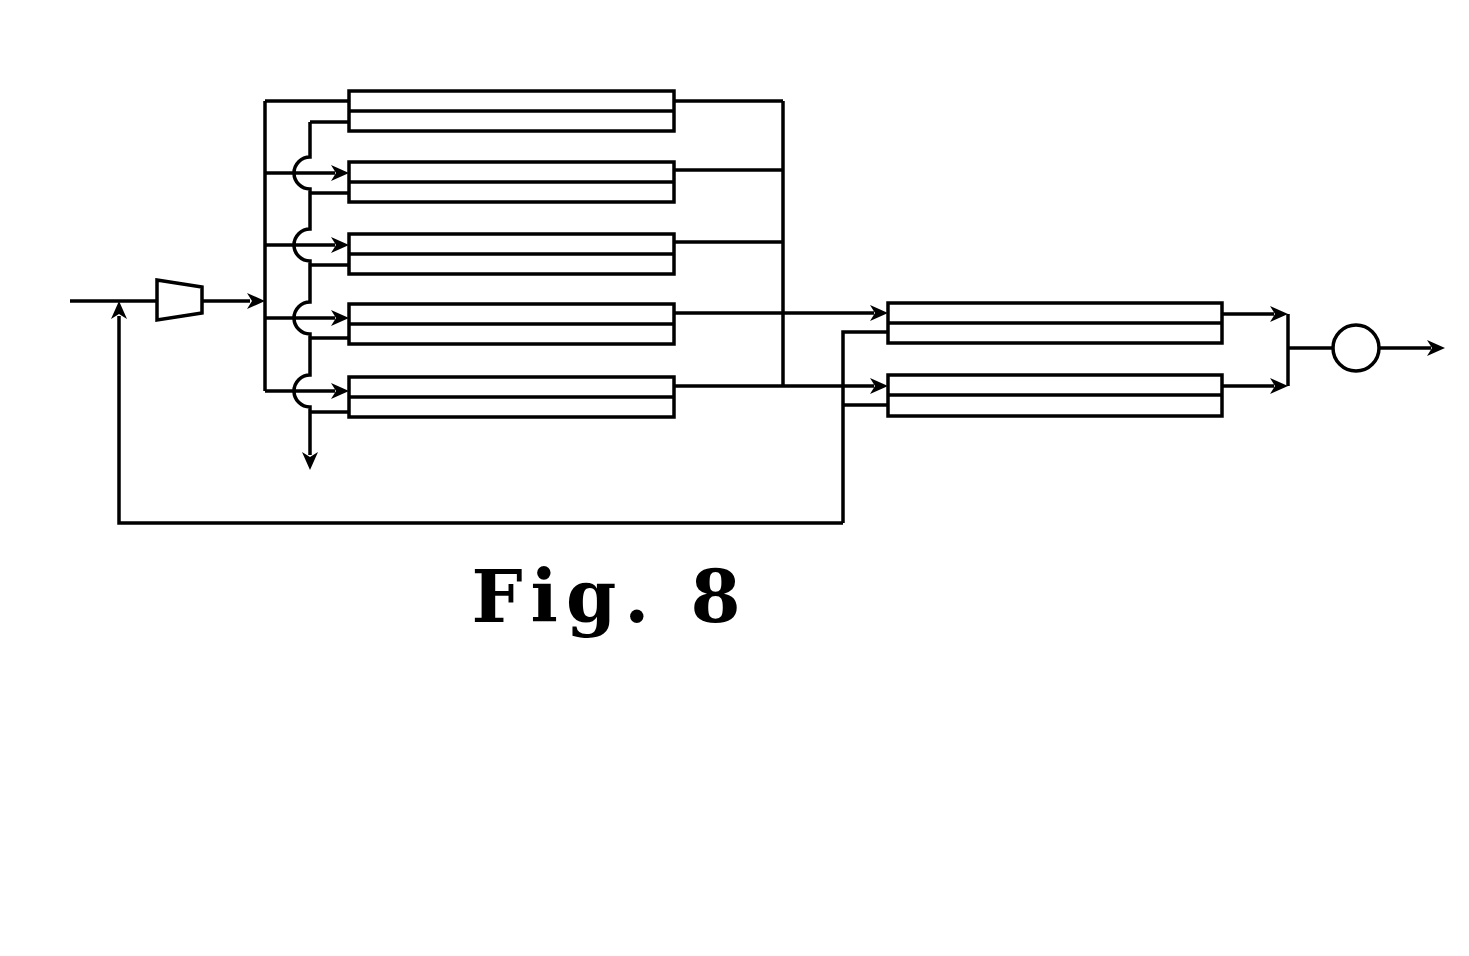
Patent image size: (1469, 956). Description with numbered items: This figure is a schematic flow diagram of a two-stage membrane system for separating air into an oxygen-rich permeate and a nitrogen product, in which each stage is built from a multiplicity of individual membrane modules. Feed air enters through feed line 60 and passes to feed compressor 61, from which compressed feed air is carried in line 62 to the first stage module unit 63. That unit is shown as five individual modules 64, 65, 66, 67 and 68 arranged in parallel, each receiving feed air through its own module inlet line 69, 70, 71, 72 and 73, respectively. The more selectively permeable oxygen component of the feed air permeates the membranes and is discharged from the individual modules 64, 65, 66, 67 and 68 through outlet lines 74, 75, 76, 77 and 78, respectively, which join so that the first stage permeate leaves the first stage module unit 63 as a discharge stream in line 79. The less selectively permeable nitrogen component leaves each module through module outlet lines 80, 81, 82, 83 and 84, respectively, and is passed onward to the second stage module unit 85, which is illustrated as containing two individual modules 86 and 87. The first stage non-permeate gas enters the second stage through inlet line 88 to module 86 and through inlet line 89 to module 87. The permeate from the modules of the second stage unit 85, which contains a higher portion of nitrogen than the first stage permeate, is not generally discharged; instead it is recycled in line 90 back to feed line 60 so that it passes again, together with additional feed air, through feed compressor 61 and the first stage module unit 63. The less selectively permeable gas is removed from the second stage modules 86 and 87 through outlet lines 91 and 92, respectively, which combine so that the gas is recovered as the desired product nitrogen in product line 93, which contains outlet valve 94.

The feed line 60 is at (84, 301).
The feed compressor 61 is at (188, 282).
The line 62 is at (226, 298).
The first stage module unit 63 is at (535, 223).
The individual module 64 is at (637, 91).
The individual module 65 is at (645, 162).
The individual module 66 is at (652, 234).
The individual module 67 is at (660, 304).
The individual module 68 is at (660, 377).
The module inlet line 69 is at (283, 101).
The module inlet line 70 is at (265, 173).
The module inlet line 71 is at (280, 245).
The module inlet line 72 is at (280, 318).
The module inlet line 73 is at (265, 391).
The outlet line 74 is at (333, 121).
The outlet line 75 is at (342, 195).
The outlet line 76 is at (332, 267).
The outlet line 77 is at (322, 340).
The outlet line 78 is at (330, 414).
The discharge stream line 79 is at (310, 432).
The module outlet line 80 is at (728, 101).
The module outlet line 81 is at (718, 170).
The module outlet line 82 is at (720, 242).
The module outlet line 83 is at (716, 313).
The module outlet line 84 is at (715, 386).
The second stage module unit 85 is at (1055, 351).
The module 86 is at (1178, 303).
The module 87 is at (1005, 416).
The inlet line 88 is at (832, 313).
The inlet line 89 is at (843, 487).
The recycle line 90 is at (412, 527).
The outlet line 91 is at (1253, 312).
The outlet line 92 is at (1250, 389).
The product line 93 is at (1405, 350).
The outlet valve 94 is at (1358, 325).